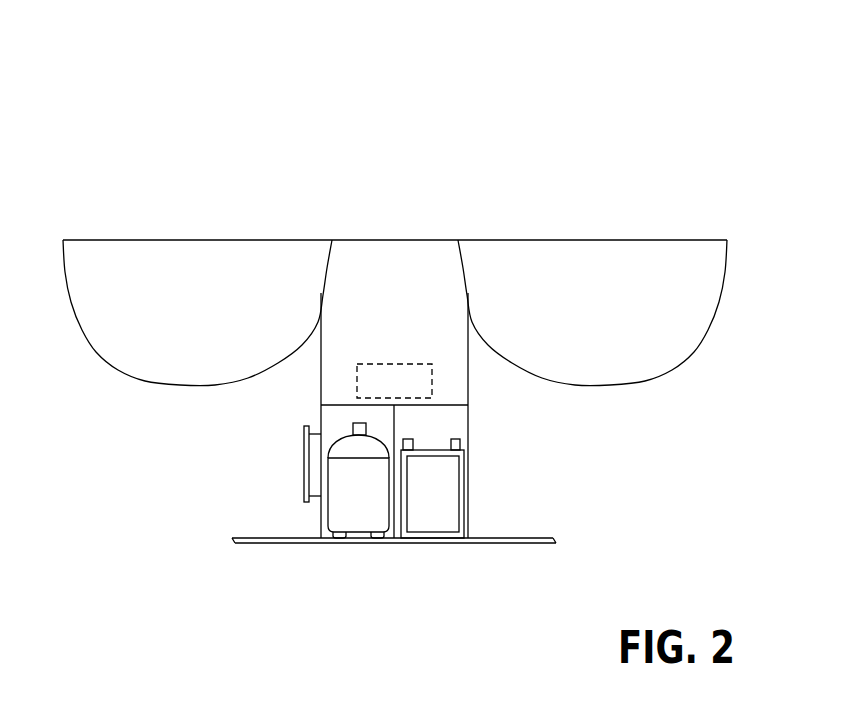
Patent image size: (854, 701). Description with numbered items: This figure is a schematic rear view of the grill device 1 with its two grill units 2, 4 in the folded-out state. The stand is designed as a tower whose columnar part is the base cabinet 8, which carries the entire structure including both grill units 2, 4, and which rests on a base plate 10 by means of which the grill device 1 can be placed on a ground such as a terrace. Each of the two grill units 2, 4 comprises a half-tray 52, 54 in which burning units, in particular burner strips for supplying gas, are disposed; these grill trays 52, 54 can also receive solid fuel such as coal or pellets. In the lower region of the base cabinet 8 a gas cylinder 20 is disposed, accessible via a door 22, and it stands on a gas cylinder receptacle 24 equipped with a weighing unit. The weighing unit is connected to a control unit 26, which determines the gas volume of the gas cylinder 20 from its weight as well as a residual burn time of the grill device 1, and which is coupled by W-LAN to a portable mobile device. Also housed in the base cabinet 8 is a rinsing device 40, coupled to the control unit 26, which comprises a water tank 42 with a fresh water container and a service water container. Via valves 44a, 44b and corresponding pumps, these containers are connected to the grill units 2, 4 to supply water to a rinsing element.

The grill device 1 is at (457, 147).
The grill unit 2 is at (172, 238).
The grill unit 4 is at (582, 238).
The base cabinet 8 is at (321, 415).
The base plate 10 is at (268, 547).
The gas cylinder 20 is at (346, 518).
The door 22 is at (319, 471).
The gas cylinder receptacle 24 is at (373, 542).
The control unit 26 is at (385, 367).
The rinsing device 40 is at (532, 467).
The water tank 42 is at (433, 507).
The valve 44a is at (408, 433).
The valve 44b is at (462, 432).
The half-tray 52 is at (155, 317).
The half-tray 54 is at (662, 322).